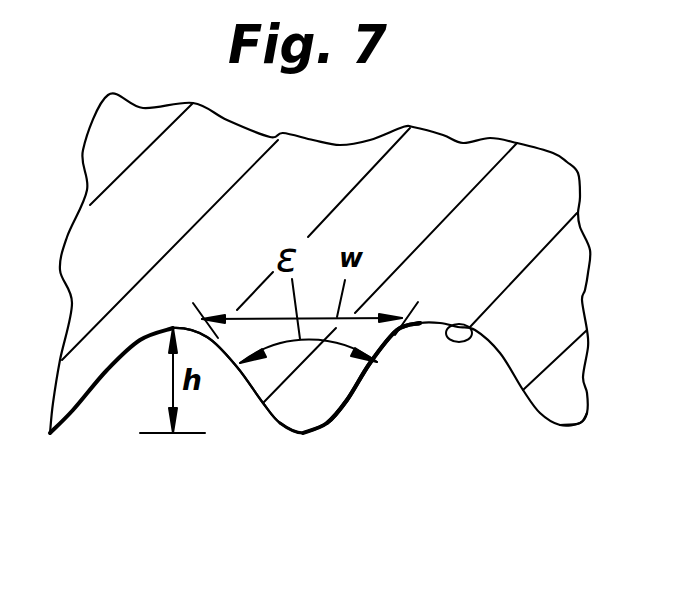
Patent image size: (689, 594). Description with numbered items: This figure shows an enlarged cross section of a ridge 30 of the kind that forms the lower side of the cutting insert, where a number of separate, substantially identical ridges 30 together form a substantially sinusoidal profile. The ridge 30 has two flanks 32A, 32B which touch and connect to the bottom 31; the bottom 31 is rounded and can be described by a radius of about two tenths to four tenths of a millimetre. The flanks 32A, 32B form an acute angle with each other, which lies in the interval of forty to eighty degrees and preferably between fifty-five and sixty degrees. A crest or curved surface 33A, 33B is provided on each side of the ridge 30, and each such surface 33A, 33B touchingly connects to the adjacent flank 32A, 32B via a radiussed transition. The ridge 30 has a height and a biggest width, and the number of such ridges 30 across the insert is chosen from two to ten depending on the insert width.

The ridge 30 is at (308, 390).
The bottom 31 is at (468, 327).
The flank 32A is at (263, 403).
The flank 32B is at (370, 393).
The crest or curved surface 33A is at (303, 433).
The crest or curved surface 33B is at (572, 432).